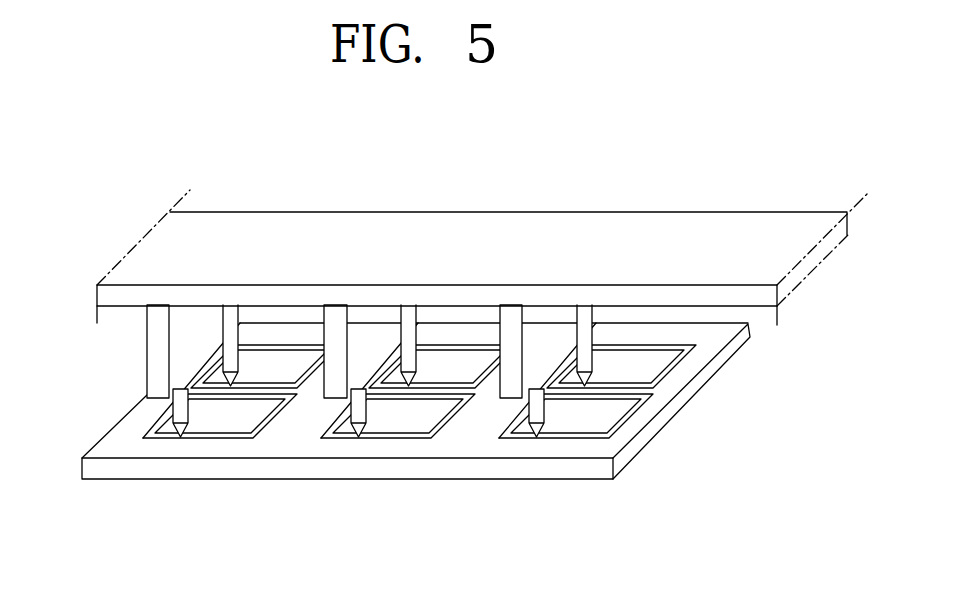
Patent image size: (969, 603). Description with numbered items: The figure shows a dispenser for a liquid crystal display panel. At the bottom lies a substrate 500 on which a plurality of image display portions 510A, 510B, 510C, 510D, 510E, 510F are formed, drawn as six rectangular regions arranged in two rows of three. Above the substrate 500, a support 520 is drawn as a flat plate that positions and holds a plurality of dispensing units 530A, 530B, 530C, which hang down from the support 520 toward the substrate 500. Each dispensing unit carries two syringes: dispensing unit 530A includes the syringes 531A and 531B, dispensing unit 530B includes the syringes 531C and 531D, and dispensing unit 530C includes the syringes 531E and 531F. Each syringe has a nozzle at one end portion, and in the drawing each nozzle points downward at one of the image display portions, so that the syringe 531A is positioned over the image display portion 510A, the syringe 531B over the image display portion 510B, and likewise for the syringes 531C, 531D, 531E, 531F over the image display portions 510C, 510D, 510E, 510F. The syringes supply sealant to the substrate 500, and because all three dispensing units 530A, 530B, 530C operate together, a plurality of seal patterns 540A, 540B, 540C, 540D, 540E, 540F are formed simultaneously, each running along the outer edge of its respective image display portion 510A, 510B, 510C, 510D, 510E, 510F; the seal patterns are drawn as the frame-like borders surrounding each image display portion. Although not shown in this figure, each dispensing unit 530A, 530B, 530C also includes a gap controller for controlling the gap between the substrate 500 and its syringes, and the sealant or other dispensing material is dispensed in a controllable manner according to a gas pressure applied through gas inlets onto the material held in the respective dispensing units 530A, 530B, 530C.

The substrate 500 is at (95, 468).
The support 520 is at (230, 223).
The dispensing unit 530A is at (160, 342).
The dispensing unit 530B is at (362, 327).
The dispensing unit 530C is at (537, 327).
The syringe 531A is at (233, 347).
The syringe 531B is at (168, 418).
The syringe 531C is at (408, 347).
The syringe 531D is at (352, 413).
The syringe 531E is at (585, 347).
The syringe 531F is at (529, 417).
The image display portion 510A is at (265, 366).
The image display portion 510B is at (220, 416).
The image display portion 510C is at (443, 366).
The image display portion 510D is at (398, 416).
The image display portion 510E is at (621, 366).
The image display portion 510F is at (576, 416).
The seal pattern 540A is at (300, 388).
The seal pattern 540B is at (208, 440).
The seal pattern 540C is at (482, 390).
The seal pattern 540D is at (387, 440).
The seal pattern 540E is at (677, 368).
The seal pattern 540F is at (628, 417).